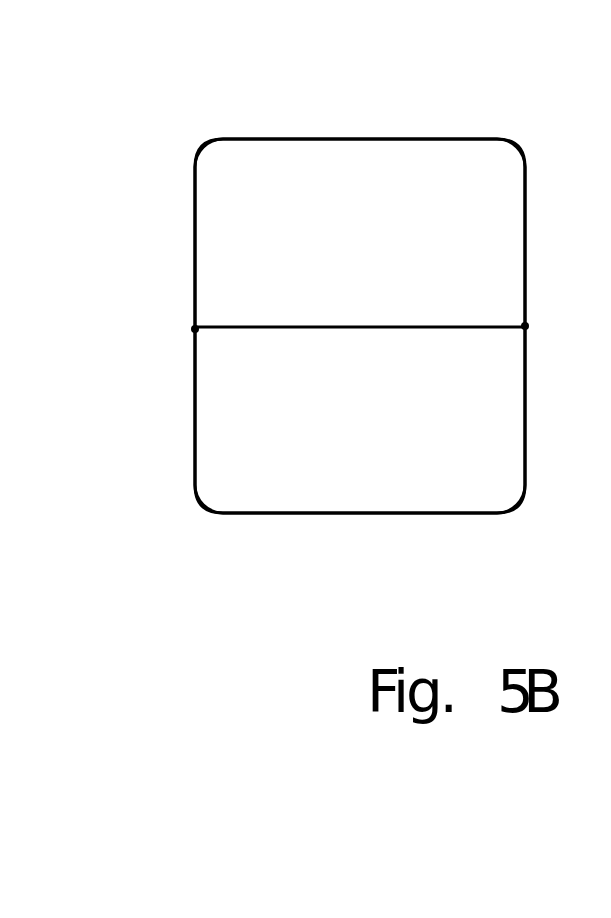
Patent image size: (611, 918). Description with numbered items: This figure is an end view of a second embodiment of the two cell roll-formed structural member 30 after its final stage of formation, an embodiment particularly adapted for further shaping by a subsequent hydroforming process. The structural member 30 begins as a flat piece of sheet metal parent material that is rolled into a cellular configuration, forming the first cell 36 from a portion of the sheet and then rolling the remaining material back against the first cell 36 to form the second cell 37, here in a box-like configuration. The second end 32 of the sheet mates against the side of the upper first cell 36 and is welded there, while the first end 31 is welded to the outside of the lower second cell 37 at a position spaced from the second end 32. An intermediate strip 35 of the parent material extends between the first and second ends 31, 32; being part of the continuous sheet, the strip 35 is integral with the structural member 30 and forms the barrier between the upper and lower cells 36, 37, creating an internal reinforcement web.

The structural member 30 is at (222, 75).
The first end 31 is at (524, 324).
The second end 32 is at (194, 331).
The intermediate strip 35 is at (345, 327).
The first cell 36 is at (225, 226).
The second cell 37 is at (476, 540).